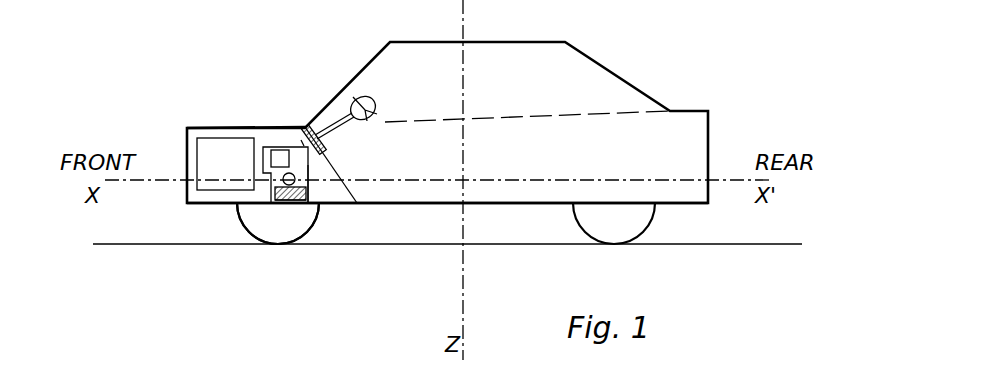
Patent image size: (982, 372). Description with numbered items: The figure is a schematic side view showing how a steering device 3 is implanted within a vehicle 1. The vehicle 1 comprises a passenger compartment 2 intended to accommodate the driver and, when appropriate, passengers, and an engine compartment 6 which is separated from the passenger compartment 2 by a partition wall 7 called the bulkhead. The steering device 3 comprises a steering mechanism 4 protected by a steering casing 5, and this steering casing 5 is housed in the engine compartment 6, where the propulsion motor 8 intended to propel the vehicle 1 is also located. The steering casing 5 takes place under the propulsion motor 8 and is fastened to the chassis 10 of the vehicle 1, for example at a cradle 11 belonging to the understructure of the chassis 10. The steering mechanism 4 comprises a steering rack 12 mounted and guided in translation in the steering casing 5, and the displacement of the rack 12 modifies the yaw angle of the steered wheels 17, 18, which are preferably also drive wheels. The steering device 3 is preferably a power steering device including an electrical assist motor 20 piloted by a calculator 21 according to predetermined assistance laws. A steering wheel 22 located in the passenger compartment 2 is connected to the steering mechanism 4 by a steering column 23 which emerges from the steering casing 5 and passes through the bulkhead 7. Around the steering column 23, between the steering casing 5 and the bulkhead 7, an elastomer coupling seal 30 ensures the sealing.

The vehicle 1 is at (625, 68).
The passenger compartment 2 is at (438, 96).
The steering device 3 is at (303, 146).
The steering mechanism 4 is at (313, 201).
The steering casing 5 is at (308, 165).
The engine compartment 6 is at (228, 127).
The partition wall (bulkhead) 7 is at (358, 201).
The propulsion motor 8 is at (210, 163).
The chassis 10 is at (488, 207).
The cradle 11 is at (287, 207).
The steering rack 12 is at (309, 193).
The steered wheel 17 is at (253, 222).
The steered wheel 18 is at (278, 223).
The assist motor 20 is at (281, 160).
The calculator 21 is at (302, 203).
The steering wheel 22 is at (370, 96).
The steering column 23 is at (325, 130).
The coupling seal 30 is at (301, 140).